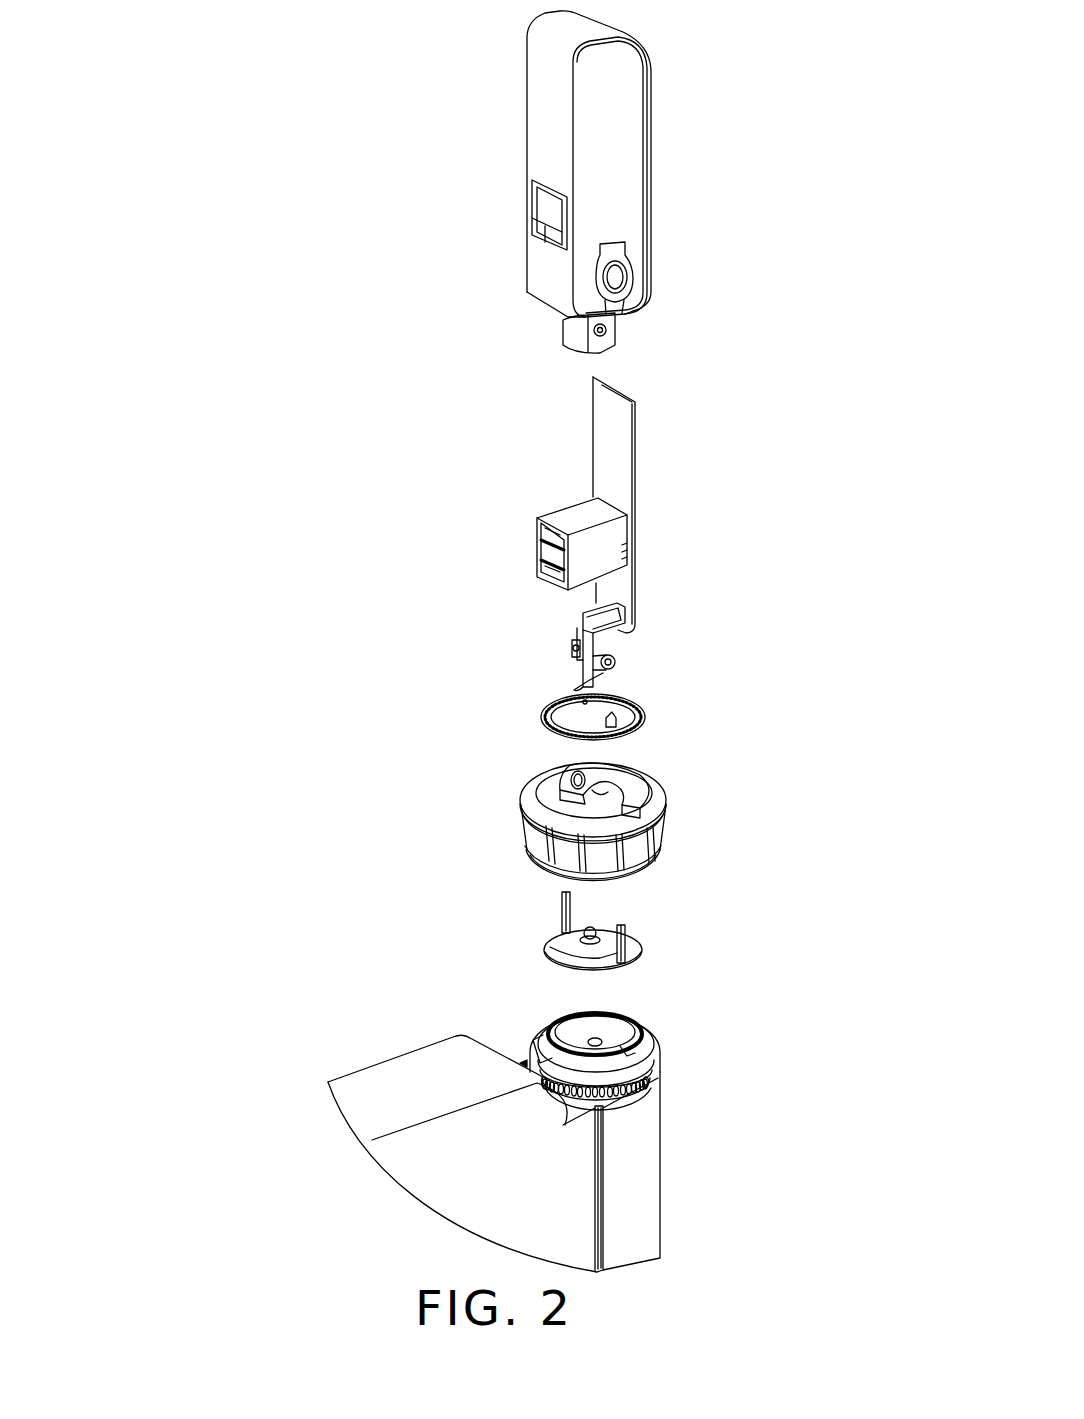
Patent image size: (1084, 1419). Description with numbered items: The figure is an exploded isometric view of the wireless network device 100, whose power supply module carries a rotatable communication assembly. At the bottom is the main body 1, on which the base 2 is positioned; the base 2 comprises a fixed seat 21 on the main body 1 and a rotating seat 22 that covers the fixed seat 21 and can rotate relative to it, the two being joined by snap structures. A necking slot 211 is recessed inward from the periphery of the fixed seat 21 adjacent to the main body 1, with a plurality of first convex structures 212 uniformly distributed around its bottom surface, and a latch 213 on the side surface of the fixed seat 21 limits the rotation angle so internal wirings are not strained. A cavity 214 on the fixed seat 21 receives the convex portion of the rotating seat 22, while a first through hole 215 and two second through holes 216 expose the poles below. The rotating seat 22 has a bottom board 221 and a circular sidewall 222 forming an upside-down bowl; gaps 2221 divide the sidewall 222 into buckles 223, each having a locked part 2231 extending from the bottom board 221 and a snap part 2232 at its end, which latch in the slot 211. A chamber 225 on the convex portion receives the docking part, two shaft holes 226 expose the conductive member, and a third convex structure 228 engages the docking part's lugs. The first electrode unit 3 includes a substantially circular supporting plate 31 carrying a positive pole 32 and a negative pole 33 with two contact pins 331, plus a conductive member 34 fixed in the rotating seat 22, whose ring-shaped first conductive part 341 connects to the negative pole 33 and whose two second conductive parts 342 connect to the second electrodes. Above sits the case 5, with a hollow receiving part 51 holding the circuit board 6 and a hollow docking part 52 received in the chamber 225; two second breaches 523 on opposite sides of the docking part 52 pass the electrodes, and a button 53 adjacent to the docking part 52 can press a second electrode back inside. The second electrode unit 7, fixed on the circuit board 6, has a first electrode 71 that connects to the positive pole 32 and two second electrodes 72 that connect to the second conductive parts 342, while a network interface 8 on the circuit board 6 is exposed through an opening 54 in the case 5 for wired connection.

The wireless network device 100 is at (207, 45).
The main body 1 is at (635, 1213).
The base 2 is at (830, 777).
The fixed seat 21 is at (667, 1063).
The slot 211 is at (630, 1097).
The first convex structures 212 is at (645, 1085).
The latch 213 is at (540, 1037).
The cavity 214 is at (618, 1028).
The first through hole 215 is at (595, 1038).
The second through holes 216 is at (643, 1050).
The rotating seat 22 is at (773, 767).
The bottom board 221 is at (637, 790).
The sidewall 222 is at (660, 830).
The gaps 2221 is at (655, 848).
The buckles 223 is at (412, 905).
The locked part 2231 is at (535, 840).
The snap part 2232 is at (545, 862).
The chamber 225 is at (566, 791).
The shaft holes 226 is at (580, 787).
The third convex structure 228 is at (580, 807).
The first electrode unit 3 is at (549, 967).
The supporting plate 31 is at (633, 944).
The positive pole 32 is at (597, 930).
The negative pole 33 is at (555, 955).
The contact pins 331 is at (562, 897).
The conductive member 34 is at (728, 702).
The first conductive part 341 is at (633, 730).
The second conductive parts 342 is at (632, 722).
The case 5 is at (752, 200).
The receiving part 51 is at (633, 220).
The docking part 52 is at (610, 338).
The second breaches 523 is at (595, 330).
The button 53 is at (613, 277).
The opening 54 is at (540, 205).
The circuit board 6 is at (608, 446).
The second electrode unit 7 is at (685, 623).
The first electrode 71 is at (600, 675).
The second electrodes 72 is at (610, 648).
The network interface 8 is at (583, 513).